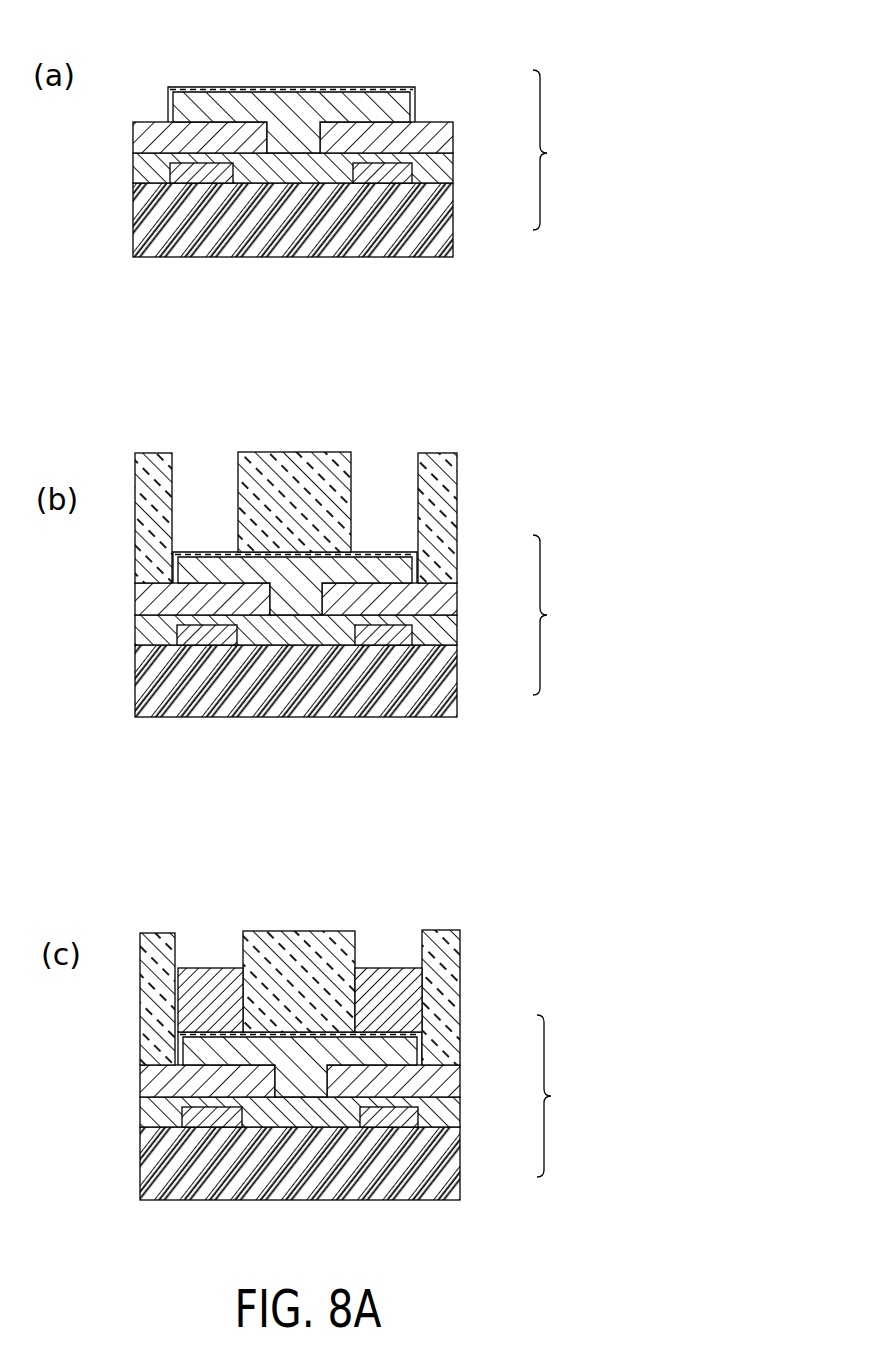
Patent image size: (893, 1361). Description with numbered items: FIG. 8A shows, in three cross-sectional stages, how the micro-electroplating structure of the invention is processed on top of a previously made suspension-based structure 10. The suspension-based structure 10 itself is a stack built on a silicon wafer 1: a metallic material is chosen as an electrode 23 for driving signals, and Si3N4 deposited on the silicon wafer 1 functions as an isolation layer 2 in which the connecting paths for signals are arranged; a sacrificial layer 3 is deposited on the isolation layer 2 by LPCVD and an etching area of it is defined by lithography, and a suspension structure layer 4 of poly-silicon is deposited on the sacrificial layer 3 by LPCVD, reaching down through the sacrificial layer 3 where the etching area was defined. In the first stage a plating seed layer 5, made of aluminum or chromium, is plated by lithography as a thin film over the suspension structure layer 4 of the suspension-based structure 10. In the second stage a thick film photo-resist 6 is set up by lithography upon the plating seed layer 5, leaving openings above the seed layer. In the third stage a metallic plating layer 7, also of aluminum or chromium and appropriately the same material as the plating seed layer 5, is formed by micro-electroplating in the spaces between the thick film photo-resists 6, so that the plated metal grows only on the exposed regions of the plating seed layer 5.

The silicon wafer 1 is at (448, 218).
The isolation layer 2 is at (445, 162).
The sacrificial layer 3 is at (445, 128).
The suspension structure layer 4 is at (408, 101).
The plating seed layer 5 is at (375, 87).
The thick film photo-resist 6 is at (453, 484).
The metallic plating layer 7 is at (205, 972).
The suspension-based structure 10 is at (562, 623).
The electrode 23 is at (145, 174).